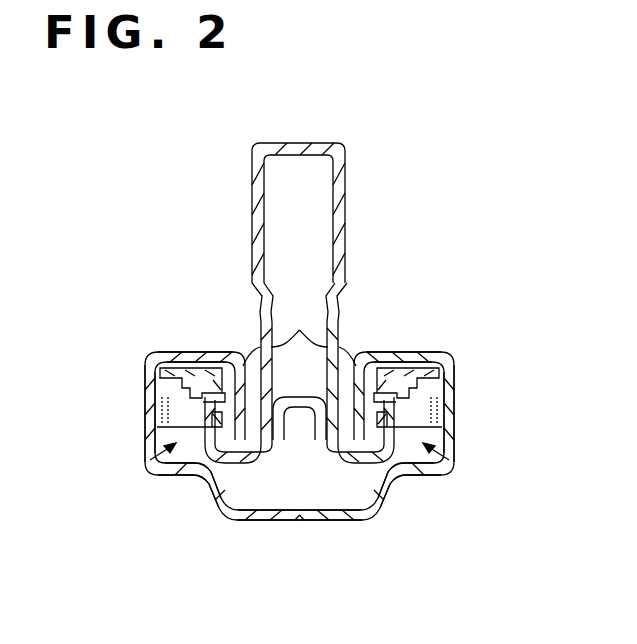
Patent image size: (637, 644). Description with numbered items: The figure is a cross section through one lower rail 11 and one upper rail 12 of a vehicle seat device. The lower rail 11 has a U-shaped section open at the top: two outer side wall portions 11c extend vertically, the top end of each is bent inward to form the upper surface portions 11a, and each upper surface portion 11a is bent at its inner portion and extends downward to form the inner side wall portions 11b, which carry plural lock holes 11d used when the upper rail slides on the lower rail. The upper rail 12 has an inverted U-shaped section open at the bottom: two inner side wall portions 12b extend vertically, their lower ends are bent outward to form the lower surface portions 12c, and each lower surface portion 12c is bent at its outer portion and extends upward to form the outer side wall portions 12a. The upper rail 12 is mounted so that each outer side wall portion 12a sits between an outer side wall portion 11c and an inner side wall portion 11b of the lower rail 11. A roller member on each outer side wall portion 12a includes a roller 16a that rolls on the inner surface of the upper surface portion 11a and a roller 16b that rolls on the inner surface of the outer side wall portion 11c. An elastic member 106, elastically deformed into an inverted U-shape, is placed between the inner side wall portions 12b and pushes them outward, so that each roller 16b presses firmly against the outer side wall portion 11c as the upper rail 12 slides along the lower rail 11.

The upper rail 12 is at (345, 183).
The inner side wall portions 12b is at (252, 243).
The lower rail 11 is at (421, 352).
The upper surface portions 11a is at (196, 352).
The inner side wall portions 11b is at (299, 373).
The outer side wall portions 11c is at (147, 437).
The lock holes 11d is at (332, 384).
The roller 16a is at (165, 376).
The roller 16b is at (162, 402).
The elastic member 106 is at (150, 460).
The outer side wall portions 12a is at (198, 448).
The lower surface portions 12c is at (240, 468).